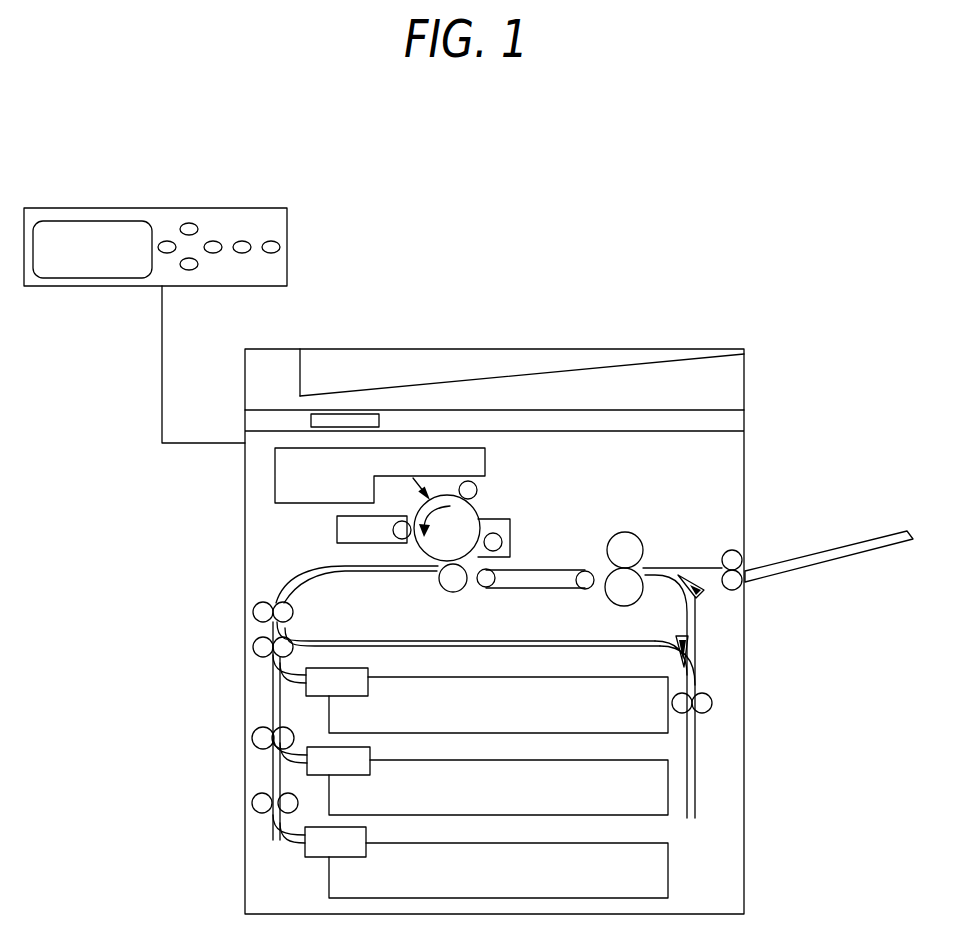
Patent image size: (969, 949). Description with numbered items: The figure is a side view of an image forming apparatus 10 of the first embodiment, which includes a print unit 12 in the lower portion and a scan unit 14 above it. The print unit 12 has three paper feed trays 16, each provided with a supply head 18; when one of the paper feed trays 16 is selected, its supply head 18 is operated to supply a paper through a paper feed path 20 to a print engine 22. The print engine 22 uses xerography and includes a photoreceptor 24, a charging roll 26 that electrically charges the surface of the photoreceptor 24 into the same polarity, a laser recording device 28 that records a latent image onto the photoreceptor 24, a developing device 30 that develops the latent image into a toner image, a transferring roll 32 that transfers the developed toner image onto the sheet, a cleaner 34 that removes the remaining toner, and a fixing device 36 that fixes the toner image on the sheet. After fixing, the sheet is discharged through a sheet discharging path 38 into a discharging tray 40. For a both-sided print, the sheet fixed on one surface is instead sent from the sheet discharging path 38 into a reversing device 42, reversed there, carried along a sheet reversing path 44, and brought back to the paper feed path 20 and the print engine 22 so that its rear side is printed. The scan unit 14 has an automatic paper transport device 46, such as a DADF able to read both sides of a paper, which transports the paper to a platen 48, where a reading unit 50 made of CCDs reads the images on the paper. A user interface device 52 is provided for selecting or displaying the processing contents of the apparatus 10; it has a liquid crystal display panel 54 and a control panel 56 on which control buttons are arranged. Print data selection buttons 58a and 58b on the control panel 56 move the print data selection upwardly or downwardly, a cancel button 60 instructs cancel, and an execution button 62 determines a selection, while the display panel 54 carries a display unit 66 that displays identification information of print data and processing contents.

The image forming apparatus 10 is at (846, 253).
The print unit 12 is at (763, 475).
The scan unit 14 is at (763, 381).
The paper feed trays 16 is at (655, 694).
The supply head 18 is at (322, 683).
The paper feed path 20 is at (284, 587).
The print engine 22 is at (279, 545).
The photoreceptor 24 is at (467, 518).
The charging roll 26 is at (470, 490).
The laser recording device 28 is at (290, 484).
The developing device 30 is at (342, 528).
The transferring roll 32 is at (453, 583).
The cleaner 34 is at (507, 540).
The fixing device 36 is at (628, 546).
The sheet discharging path 38 is at (695, 566).
The discharging tray 40 is at (840, 568).
The reversing device 42 is at (692, 728).
The sheet reversing path 44 is at (553, 642).
The automatic paper transport device 46 is at (280, 362).
The platen 48 is at (495, 410).
The reading unit 50 is at (345, 420).
The user interface device 52 is at (279, 204).
The liquid crystal display panel 54 is at (105, 220).
The control panel 56 is at (248, 222).
The print data selection button 58a is at (189, 229).
The print data selection button 58b is at (189, 270).
The cancel button 60 is at (271, 246).
The execution button 62 is at (241, 253).
The display unit 66 is at (97, 268).